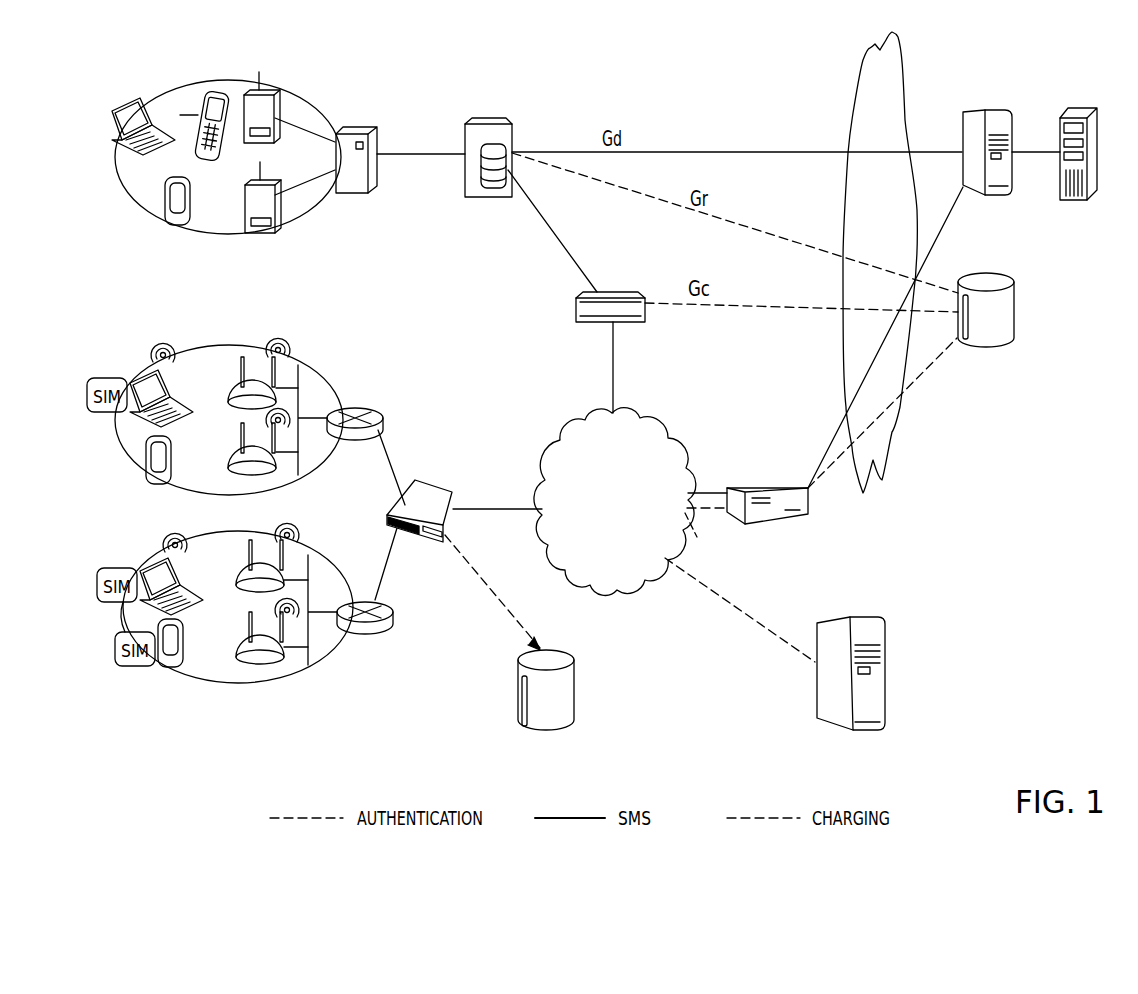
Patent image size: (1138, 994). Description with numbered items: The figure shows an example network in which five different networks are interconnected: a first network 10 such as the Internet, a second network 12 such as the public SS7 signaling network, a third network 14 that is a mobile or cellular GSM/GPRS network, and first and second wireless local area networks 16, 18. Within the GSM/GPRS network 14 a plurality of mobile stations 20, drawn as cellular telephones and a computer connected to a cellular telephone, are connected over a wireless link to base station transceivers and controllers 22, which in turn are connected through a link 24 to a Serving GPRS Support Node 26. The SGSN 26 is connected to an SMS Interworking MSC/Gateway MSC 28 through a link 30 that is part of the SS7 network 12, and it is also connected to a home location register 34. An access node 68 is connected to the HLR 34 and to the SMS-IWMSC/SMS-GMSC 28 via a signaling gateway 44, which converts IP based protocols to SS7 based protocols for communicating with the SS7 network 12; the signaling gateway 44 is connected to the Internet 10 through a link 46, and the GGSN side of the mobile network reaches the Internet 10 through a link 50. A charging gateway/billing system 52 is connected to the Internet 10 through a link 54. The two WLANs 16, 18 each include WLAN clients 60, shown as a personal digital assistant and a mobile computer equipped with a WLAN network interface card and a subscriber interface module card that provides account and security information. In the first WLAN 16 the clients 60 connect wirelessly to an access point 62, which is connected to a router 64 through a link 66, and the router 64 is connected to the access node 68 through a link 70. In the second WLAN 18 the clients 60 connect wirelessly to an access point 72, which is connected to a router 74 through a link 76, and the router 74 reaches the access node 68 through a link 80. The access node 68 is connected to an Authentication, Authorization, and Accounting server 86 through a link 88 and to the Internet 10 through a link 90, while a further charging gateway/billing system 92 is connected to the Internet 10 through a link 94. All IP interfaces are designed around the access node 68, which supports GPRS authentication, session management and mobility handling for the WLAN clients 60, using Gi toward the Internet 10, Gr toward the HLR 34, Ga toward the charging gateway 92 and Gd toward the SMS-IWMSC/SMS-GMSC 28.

The first network 10 is at (657, 408).
The second network 12 is at (902, 55).
The third network 14 is at (312, 98).
The first wireless local area network 16 is at (312, 368).
The second wireless local area network 18 is at (157, 553).
The mobile stations 20 is at (247, 93).
The base station transceivers and controllers 22 is at (353, 127).
The link 24 is at (443, 153).
The Serving GPRS Support Node 26 is at (493, 118).
The SMS Interworking MSC/Gateway MSC 28 is at (577, 305).
The link 30 is at (550, 227).
The home location register 34 is at (1015, 305).
The signaling gateway 44 is at (767, 488).
The link 46 is at (727, 488).
The link 50 is at (613, 360).
The charging gateway/billing system 52 is at (860, 622).
The link 54 is at (705, 588).
The WLAN clients 60 is at (137, 373).
The access point 62 is at (252, 377).
The router 64 is at (357, 407).
The link 66 is at (317, 410).
The access node 68 is at (422, 480).
The link 70 is at (387, 470).
The access point 72 is at (243, 565).
The router 74 is at (370, 632).
The link 76 is at (317, 615).
The link 80 is at (390, 568).
The Authentication, Authorization, and Accounting server 86 is at (577, 692).
The link 88 is at (543, 637).
The link 90 is at (463, 507).
The charging gateway/billing system 92 is at (1082, 108).
The link 94 is at (945, 223).